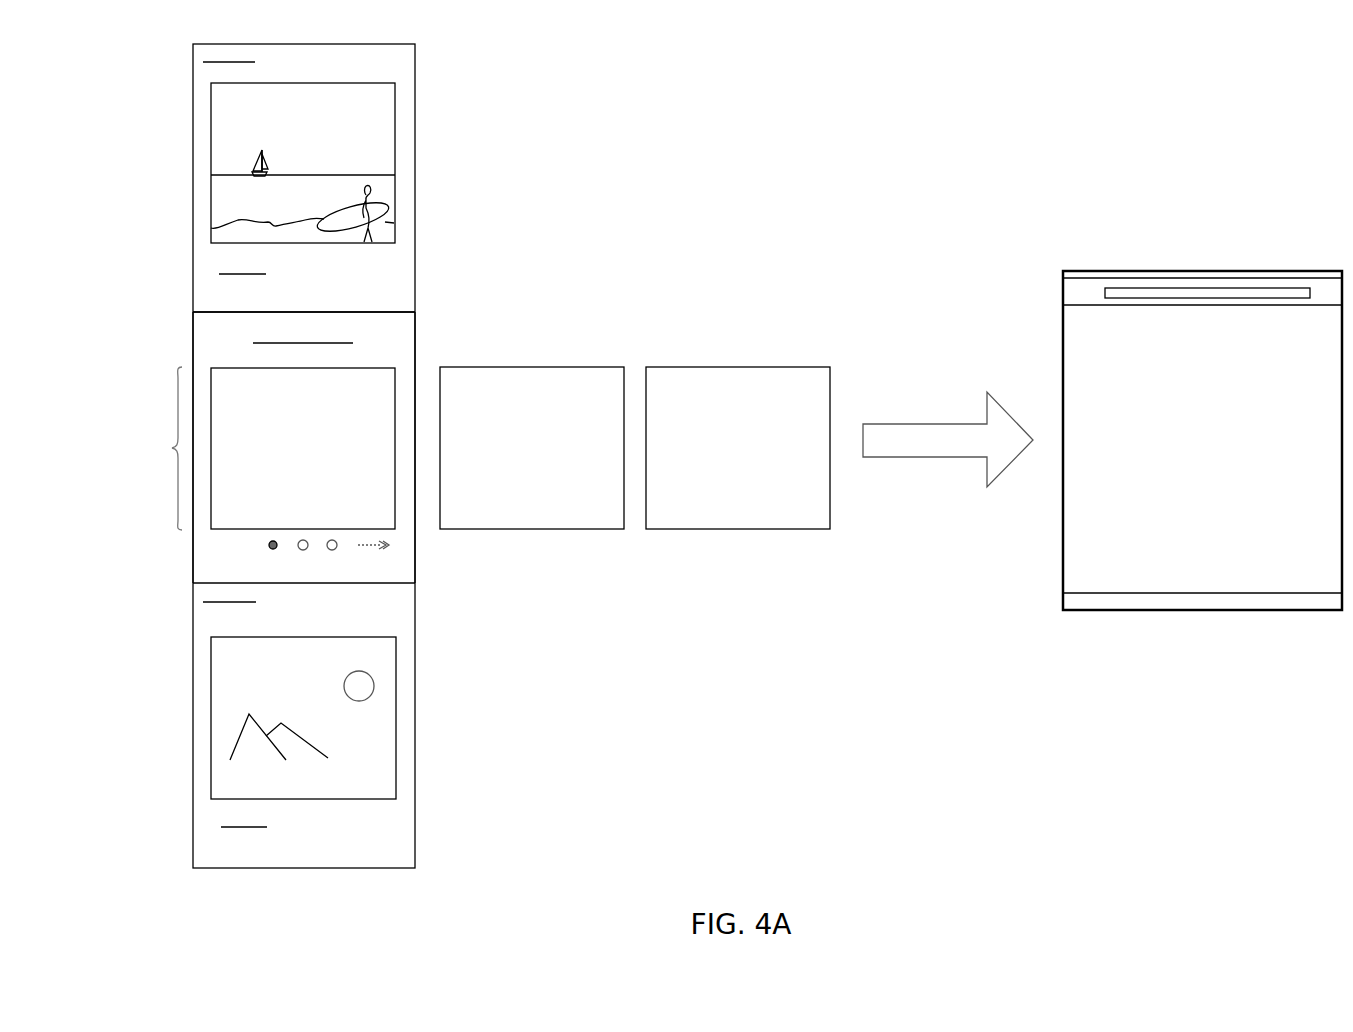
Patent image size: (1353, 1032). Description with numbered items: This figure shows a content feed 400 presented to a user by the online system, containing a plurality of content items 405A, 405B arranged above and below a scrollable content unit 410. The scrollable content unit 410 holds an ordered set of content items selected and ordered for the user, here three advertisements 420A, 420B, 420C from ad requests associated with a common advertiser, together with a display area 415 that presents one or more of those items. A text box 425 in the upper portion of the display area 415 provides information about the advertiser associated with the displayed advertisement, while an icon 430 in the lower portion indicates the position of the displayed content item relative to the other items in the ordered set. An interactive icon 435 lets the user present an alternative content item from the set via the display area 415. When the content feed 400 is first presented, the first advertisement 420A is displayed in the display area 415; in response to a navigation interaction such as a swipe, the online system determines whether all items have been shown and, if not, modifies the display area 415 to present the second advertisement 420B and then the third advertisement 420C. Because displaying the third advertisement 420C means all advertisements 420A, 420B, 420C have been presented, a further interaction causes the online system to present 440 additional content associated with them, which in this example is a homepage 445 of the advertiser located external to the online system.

The content feed 400 is at (286, 33).
The content item 405A is at (420, 102).
The content item 405B is at (420, 664).
The scrollable content unit 410 is at (420, 331).
The display area 415 is at (157, 448).
The first advertisement 420A is at (283, 471).
The second advertisement 420B is at (512, 471).
The third advertisement 420C is at (718, 471).
The text box 425 is at (243, 342).
The icon 430 is at (250, 544).
The interactive icon 435 is at (401, 544).
The presentation of additional content 440 is at (932, 450).
The homepage 445 is at (1186, 479).